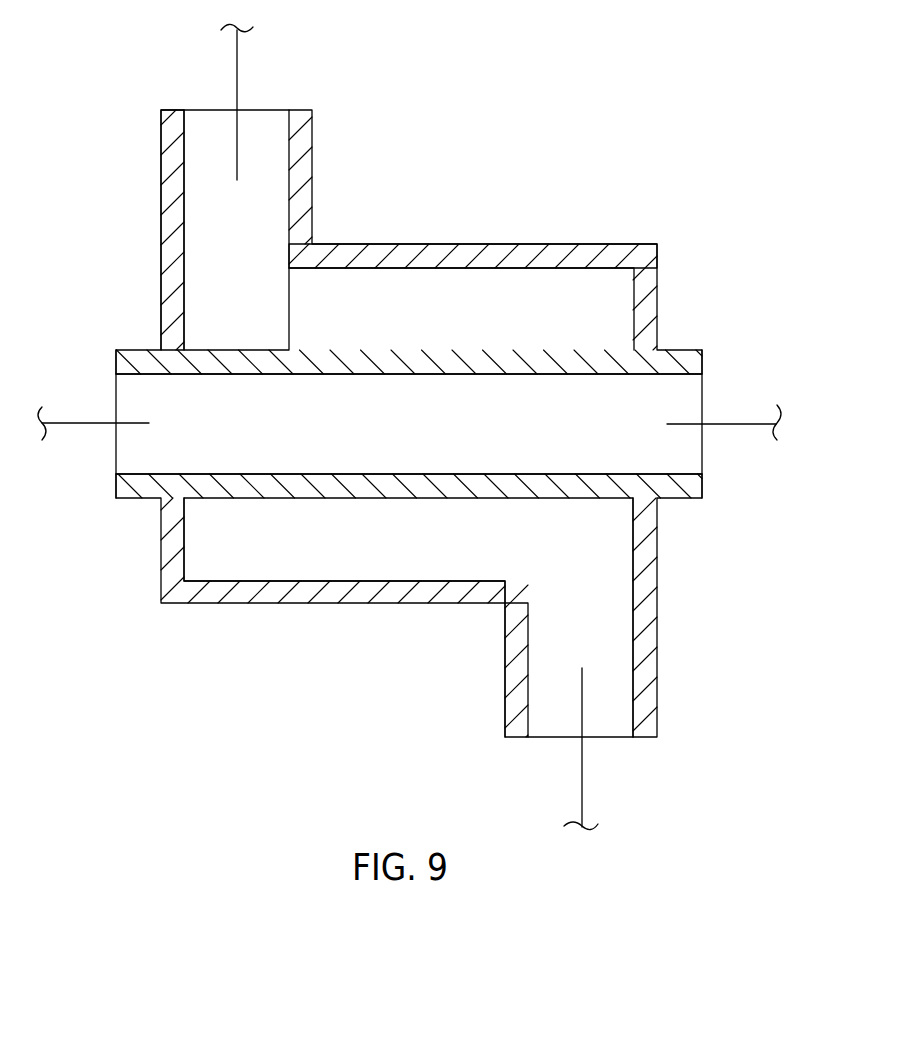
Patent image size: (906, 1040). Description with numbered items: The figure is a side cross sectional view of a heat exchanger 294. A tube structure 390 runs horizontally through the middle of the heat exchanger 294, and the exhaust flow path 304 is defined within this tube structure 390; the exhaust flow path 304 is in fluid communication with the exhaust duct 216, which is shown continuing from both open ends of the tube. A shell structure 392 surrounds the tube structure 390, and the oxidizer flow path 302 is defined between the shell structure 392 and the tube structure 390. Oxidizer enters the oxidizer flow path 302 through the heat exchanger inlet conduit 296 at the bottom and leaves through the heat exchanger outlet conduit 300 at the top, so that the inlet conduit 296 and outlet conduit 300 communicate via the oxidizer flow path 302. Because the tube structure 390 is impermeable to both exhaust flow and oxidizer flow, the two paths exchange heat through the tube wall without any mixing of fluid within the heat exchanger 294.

The heat exchanger 294 is at (613, 143).
The exhaust duct 216 is at (73, 423).
The heat exchanger outlet conduit 300 is at (237, 58).
The heat exchanger inlet conduit 296 is at (582, 798).
The oxidizer flow path 302 is at (324, 543).
The exhaust flow path 304 is at (427, 436).
The tube structure 390 is at (237, 348).
The shell structure 392 is at (483, 244).